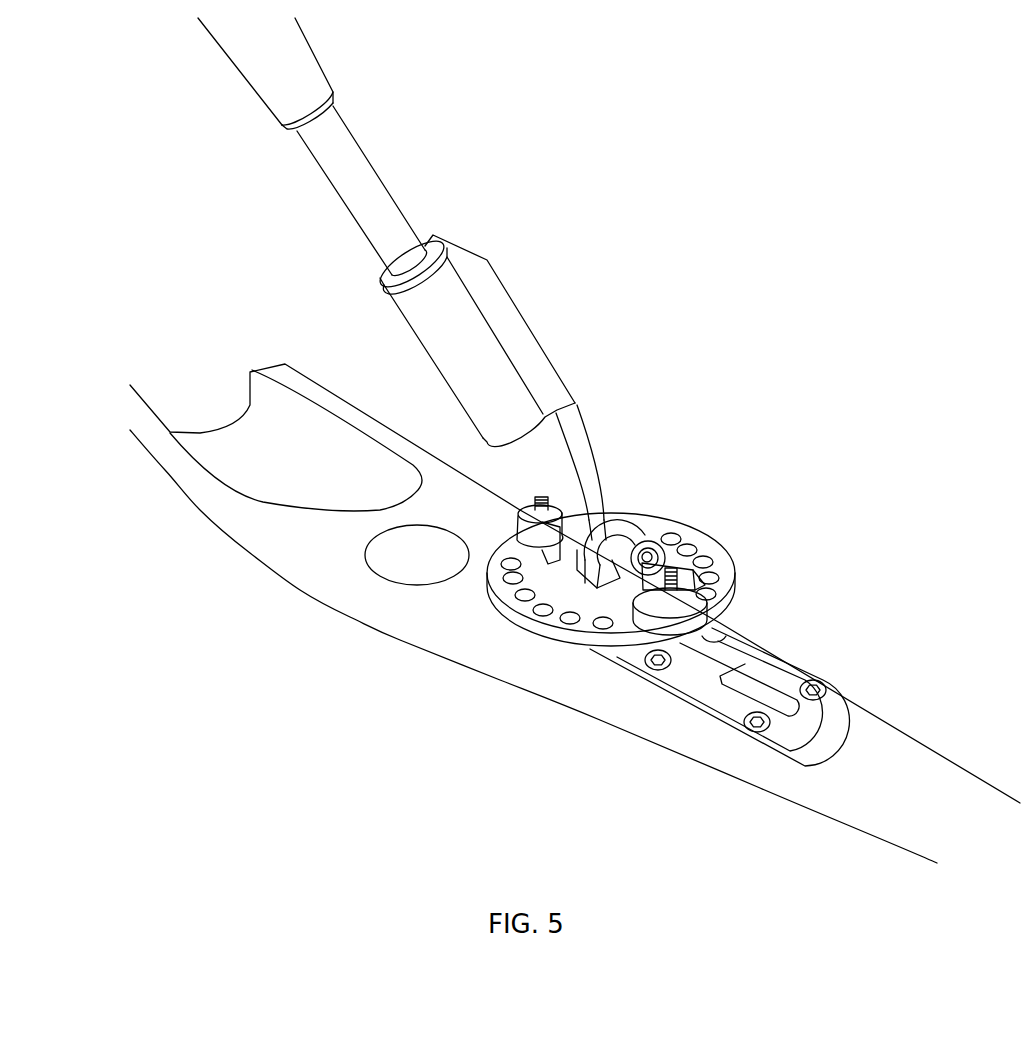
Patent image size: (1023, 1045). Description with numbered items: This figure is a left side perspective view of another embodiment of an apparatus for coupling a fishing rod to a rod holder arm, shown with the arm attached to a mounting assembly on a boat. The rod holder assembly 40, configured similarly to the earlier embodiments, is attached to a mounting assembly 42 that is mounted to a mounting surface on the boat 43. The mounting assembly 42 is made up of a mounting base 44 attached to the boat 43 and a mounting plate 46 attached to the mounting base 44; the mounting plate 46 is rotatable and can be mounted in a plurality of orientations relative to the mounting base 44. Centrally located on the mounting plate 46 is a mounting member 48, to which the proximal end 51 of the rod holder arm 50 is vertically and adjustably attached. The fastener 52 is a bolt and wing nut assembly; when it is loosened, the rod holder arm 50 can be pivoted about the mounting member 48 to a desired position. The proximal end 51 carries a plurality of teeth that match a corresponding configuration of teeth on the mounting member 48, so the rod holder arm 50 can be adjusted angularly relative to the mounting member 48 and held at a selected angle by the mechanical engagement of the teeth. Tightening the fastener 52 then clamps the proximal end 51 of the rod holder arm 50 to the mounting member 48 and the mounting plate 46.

The rod holder assembly 40 is at (553, 360).
The mounting assembly 42 is at (757, 603).
The boat 43 is at (878, 750).
The mounting base 44 is at (835, 720).
The mounting plate 46 is at (723, 573).
The mounting member 48 is at (630, 514).
The rod holder arm 50 is at (572, 452).
The proximal end 51 is at (610, 514).
The fastener 52 is at (643, 577).